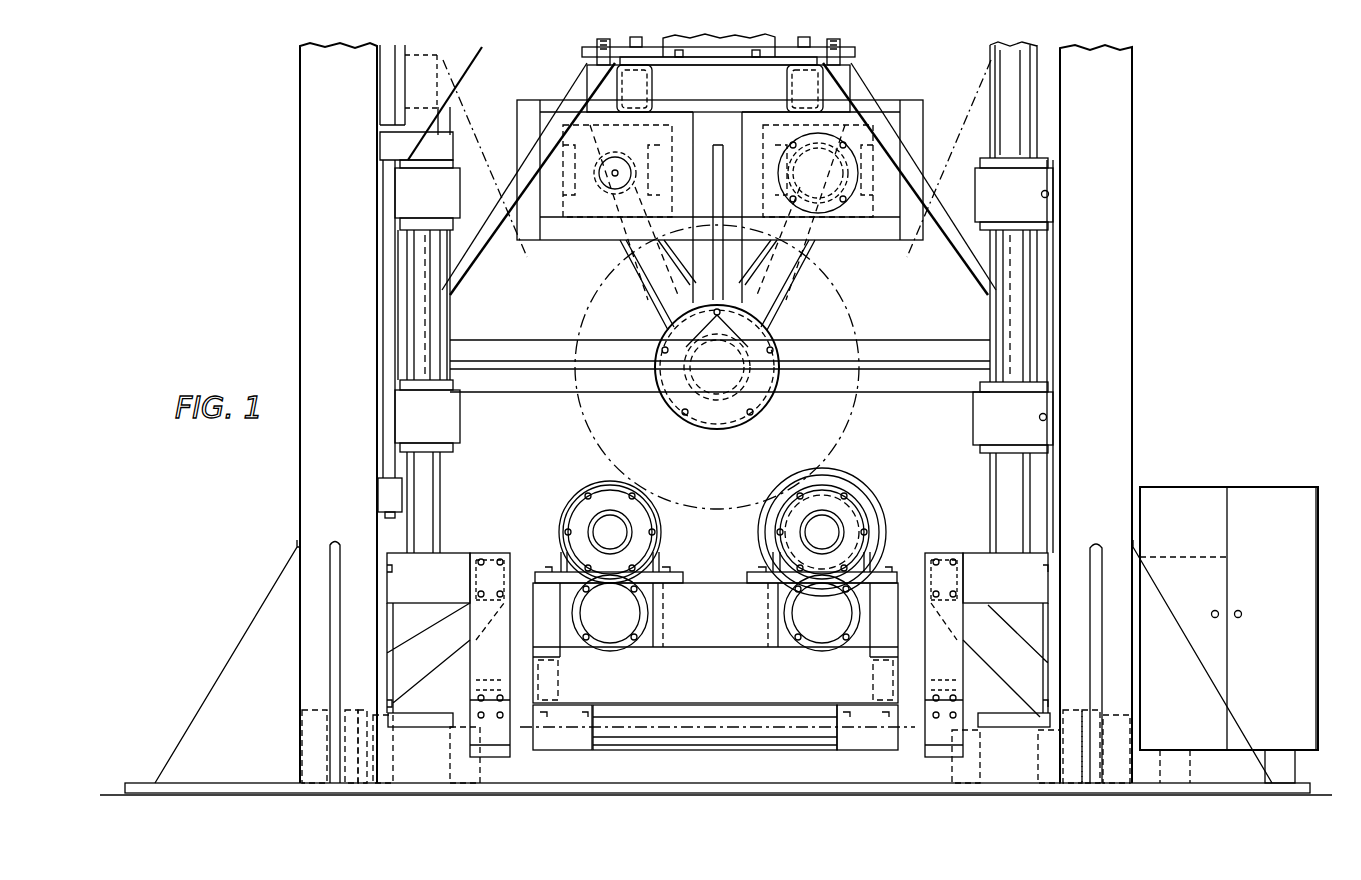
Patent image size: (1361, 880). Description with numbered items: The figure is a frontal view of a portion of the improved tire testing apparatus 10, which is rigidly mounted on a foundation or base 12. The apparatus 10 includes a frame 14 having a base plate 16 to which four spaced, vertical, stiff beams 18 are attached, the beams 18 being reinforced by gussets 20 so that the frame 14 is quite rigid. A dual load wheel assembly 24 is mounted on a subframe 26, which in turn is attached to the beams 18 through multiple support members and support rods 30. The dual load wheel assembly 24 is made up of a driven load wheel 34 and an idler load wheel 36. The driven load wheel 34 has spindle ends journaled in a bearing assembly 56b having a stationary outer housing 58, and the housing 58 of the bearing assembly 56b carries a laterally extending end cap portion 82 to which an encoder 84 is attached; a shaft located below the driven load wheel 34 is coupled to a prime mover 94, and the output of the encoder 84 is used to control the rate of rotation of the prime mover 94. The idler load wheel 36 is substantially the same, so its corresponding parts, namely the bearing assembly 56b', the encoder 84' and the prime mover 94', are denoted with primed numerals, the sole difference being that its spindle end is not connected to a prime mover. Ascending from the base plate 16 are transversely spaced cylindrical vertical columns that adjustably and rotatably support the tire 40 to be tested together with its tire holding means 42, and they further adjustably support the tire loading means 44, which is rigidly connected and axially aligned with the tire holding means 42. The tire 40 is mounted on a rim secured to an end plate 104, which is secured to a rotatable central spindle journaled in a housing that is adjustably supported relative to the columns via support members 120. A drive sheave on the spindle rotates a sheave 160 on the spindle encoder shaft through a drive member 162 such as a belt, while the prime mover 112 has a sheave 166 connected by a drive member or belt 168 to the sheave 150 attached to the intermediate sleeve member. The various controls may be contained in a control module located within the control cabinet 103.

The apparatus 10 is at (288, 413).
The base 12 is at (124, 783).
The frame 14 is at (1092, 291).
The base plate 16 is at (232, 783).
The vertical stiff beams 18 is at (346, 313).
The gussets 20 is at (275, 622).
The dual load wheel assembly 24 is at (552, 528).
The subframe 26 is at (704, 660).
The support rods 30 is at (790, 740).
The driven load wheel 34 is at (833, 514).
The idler load wheel 36 is at (609, 511).
The tire 40 is at (865, 310).
The tire holding means 42 is at (882, 90).
The tire loading means 44 is at (660, 88).
The bearing assembly 56b is at (848, 532).
The bearing assembly 56b' is at (582, 509).
The stationary outer housing 58 is at (860, 497).
The end cap portion 82 is at (798, 522).
The encoder 84 is at (856, 522).
The encoder 84' is at (647, 532).
The prime mover 94 is at (796, 613).
The prime mover 94' is at (610, 630).
The control cabinet 103 is at (1180, 517).
The end plate 104 is at (678, 393).
The prime mover 112 is at (828, 205).
The support members 120 is at (540, 357).
The sheave 150 is at (765, 395).
The sheave 160 is at (625, 202).
The drive member 162 is at (647, 298).
The sheave 166 is at (808, 203).
The drive member 168 is at (783, 318).